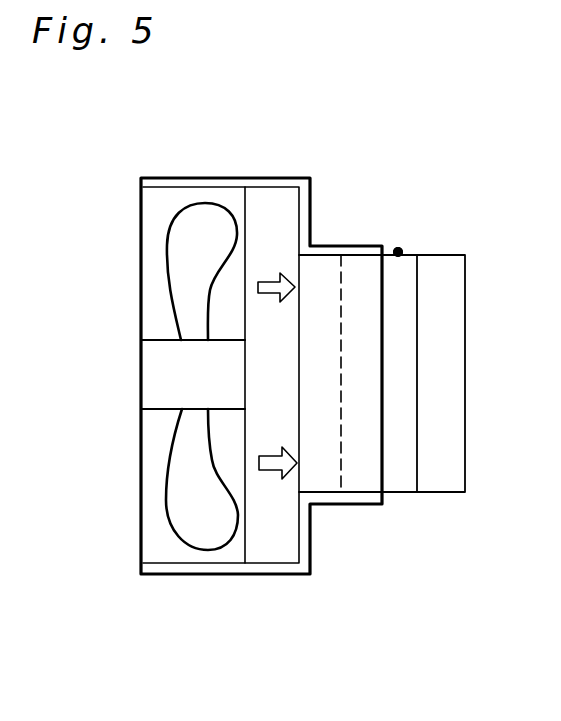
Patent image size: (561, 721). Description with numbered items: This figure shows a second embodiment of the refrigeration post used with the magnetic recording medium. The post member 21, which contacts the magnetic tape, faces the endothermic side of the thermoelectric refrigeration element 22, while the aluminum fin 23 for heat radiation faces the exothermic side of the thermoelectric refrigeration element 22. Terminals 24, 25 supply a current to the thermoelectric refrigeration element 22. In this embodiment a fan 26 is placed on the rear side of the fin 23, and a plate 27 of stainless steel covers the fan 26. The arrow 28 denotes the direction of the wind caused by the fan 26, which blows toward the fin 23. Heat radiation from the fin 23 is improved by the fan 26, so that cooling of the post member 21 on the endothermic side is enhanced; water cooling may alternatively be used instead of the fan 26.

The post member 21 is at (447, 470).
The thermoelectric refrigeration element 22 is at (401, 470).
The fin 23 is at (353, 268).
The terminal 24 is at (398, 250).
The terminal 25 is at (398, 250).
The fan 26 is at (198, 237).
The plate 27 is at (275, 565).
The arrow 28 is at (272, 279).